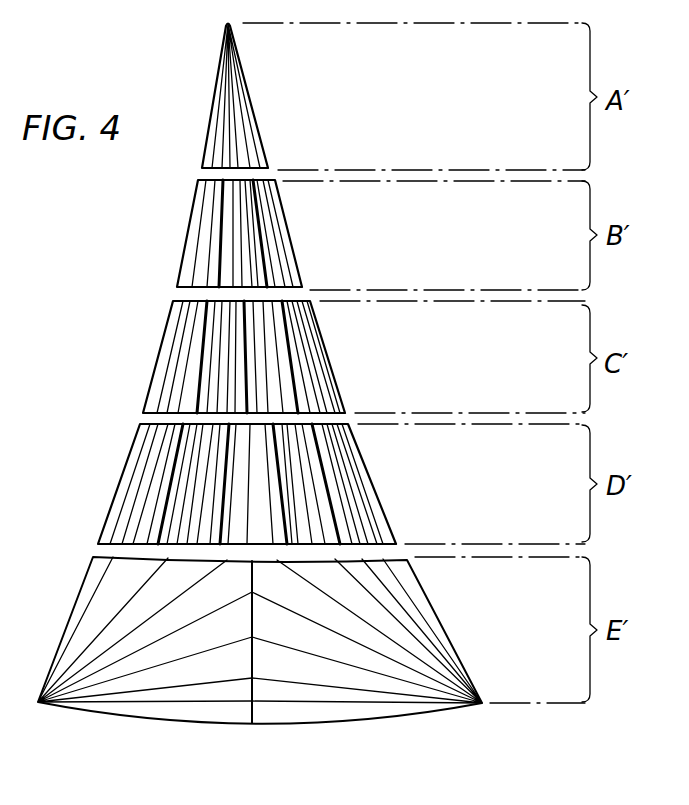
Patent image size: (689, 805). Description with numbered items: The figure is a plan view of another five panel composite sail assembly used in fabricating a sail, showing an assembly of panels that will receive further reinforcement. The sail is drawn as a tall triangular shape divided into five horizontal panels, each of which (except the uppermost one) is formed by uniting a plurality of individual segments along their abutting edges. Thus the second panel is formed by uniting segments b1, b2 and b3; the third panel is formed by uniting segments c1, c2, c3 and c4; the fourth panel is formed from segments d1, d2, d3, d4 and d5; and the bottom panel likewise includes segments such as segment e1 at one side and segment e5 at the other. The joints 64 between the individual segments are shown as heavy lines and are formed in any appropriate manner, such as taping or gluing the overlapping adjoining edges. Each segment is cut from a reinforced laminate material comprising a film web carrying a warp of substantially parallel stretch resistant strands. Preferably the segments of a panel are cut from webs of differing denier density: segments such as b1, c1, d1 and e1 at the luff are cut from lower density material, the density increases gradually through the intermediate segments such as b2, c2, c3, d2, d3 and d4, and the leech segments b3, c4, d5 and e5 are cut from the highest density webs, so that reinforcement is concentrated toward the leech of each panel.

The joints 64 is at (218, 262).
The segment b1 is at (205, 240).
The segment b2 is at (237, 211).
The segment b3 is at (270, 212).
The segment c1 is at (178, 362).
The segment c2 is at (226, 321).
The segment c3 is at (274, 352).
The segment c4 is at (313, 368).
The segment d1 is at (152, 440).
The segment d2 is at (195, 455).
The segment d3 is at (243, 473).
The segment d4 is at (298, 463).
The segment d5 is at (350, 487).
The segment e1 is at (100, 628).
The segment e5 is at (395, 655).